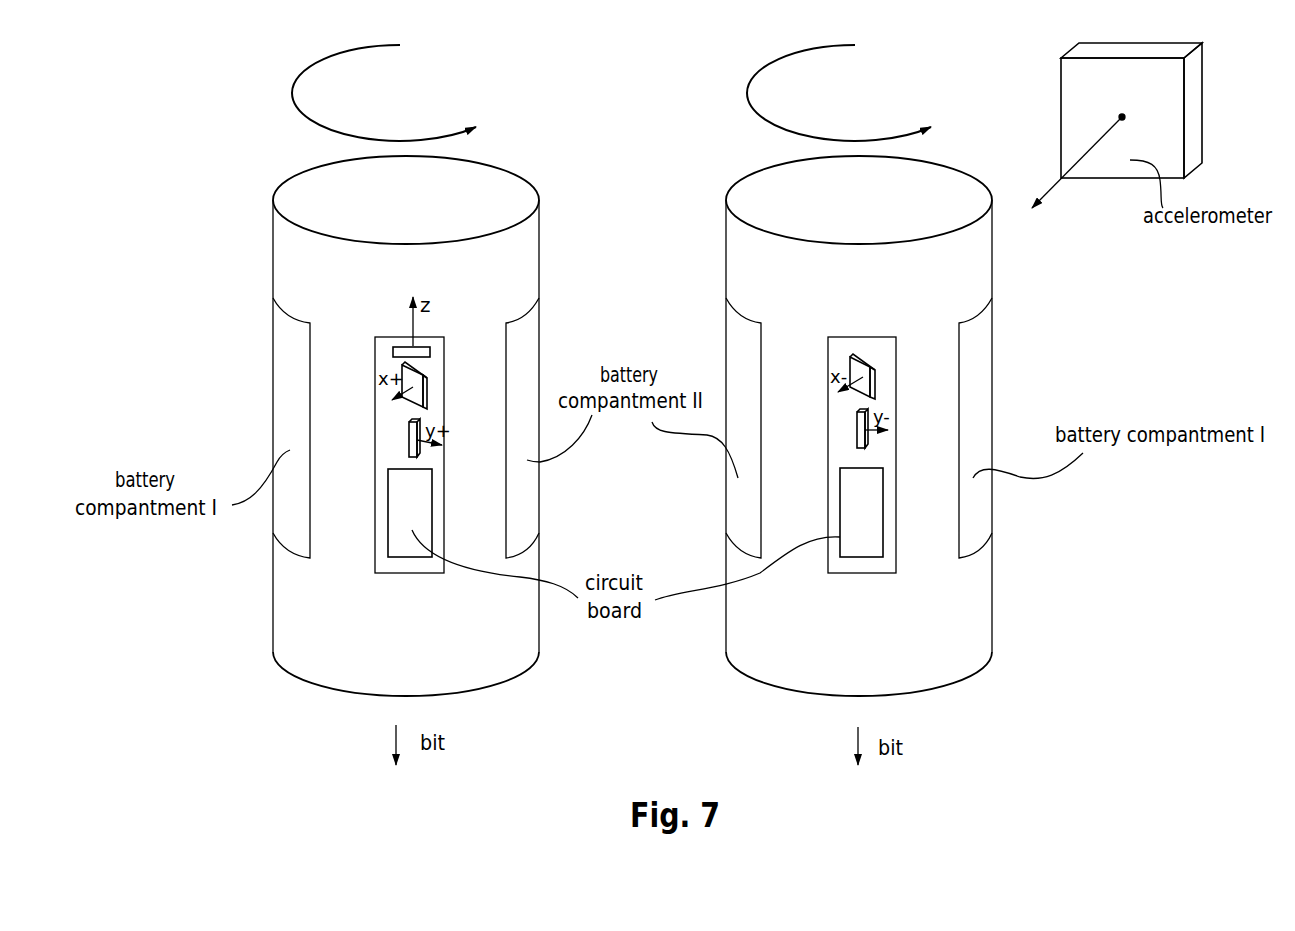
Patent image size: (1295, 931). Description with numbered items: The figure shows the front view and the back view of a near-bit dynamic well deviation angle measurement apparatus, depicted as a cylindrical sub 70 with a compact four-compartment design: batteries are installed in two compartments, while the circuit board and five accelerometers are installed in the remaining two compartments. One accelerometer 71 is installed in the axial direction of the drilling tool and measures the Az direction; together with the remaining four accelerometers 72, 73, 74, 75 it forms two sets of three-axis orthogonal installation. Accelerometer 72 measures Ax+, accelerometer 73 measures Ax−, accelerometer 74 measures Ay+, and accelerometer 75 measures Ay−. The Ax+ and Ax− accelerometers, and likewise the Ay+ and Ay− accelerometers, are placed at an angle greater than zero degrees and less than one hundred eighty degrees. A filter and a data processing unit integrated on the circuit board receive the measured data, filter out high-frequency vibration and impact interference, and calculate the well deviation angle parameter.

The tool housing (cylindrical body) 70 is at (753, 252).
The accelerometer 71 is at (393, 351).
The accelerometer 72 is at (393, 397).
The accelerometer 73 is at (875, 380).
The accelerometer 74 is at (409, 425).
The accelerometer 75 is at (870, 410).